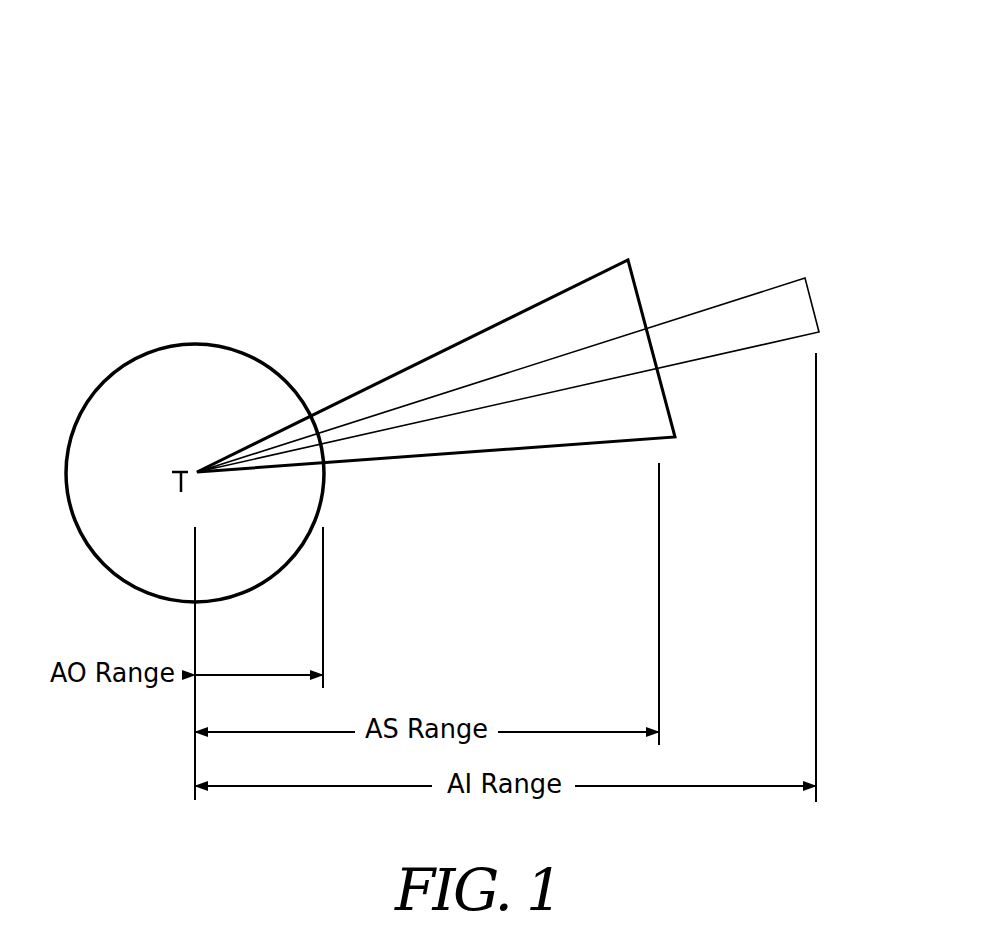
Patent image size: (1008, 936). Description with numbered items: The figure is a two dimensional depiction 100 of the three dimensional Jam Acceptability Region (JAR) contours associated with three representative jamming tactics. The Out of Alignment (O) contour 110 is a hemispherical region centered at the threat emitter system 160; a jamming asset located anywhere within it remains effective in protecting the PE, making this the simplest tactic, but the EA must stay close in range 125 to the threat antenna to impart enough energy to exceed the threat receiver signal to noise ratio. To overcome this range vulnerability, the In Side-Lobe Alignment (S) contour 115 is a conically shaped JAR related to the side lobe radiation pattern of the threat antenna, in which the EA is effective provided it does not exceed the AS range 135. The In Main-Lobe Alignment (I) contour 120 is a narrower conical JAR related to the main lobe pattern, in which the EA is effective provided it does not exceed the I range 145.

The range zone diagram 100 is at (396, 222).
The Out of Alignment (O) JAR contour 110 is at (267, 355).
The In Side-Lobe Alignment (S) JAR contour 115 is at (561, 288).
The In Main-Lobe Alignment (I) JAR contour 120 is at (751, 294).
The range 125 is at (323, 606).
The AS range 135 is at (659, 606).
The I range 145 is at (816, 606).
The threat emitter system 160 is at (174, 490).